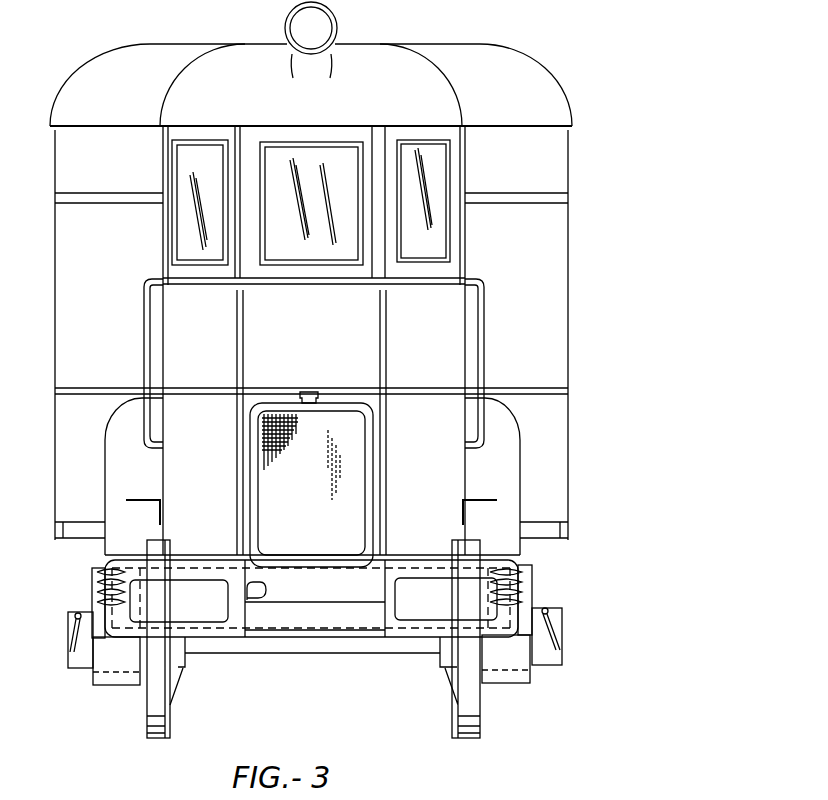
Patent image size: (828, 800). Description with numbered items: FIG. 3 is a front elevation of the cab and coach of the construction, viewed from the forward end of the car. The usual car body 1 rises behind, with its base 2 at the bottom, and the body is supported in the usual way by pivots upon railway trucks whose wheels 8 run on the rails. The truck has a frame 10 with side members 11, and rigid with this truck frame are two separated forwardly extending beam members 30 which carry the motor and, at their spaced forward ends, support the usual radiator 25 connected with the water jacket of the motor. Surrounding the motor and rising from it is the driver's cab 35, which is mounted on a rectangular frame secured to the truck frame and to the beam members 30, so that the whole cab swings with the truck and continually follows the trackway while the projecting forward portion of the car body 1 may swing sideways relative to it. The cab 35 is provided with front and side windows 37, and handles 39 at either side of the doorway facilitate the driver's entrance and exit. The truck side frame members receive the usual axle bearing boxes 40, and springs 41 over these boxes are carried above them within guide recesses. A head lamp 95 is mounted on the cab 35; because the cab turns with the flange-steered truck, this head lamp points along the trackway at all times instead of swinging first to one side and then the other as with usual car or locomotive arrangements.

The car body 1 is at (556, 280).
The base 2 is at (562, 528).
The wheels 8 is at (152, 703).
The frame 10 is at (402, 637).
The side members 11 is at (110, 620).
The radiator 25 is at (375, 497).
The beam members 30 is at (262, 598).
The cab 35 is at (311, 422).
The windows 37 is at (182, 167).
The handles 39 is at (146, 330).
The axle bearing boxes 40 is at (78, 655).
The springs 41 is at (97, 590).
The head lamp 95 is at (337, 22).